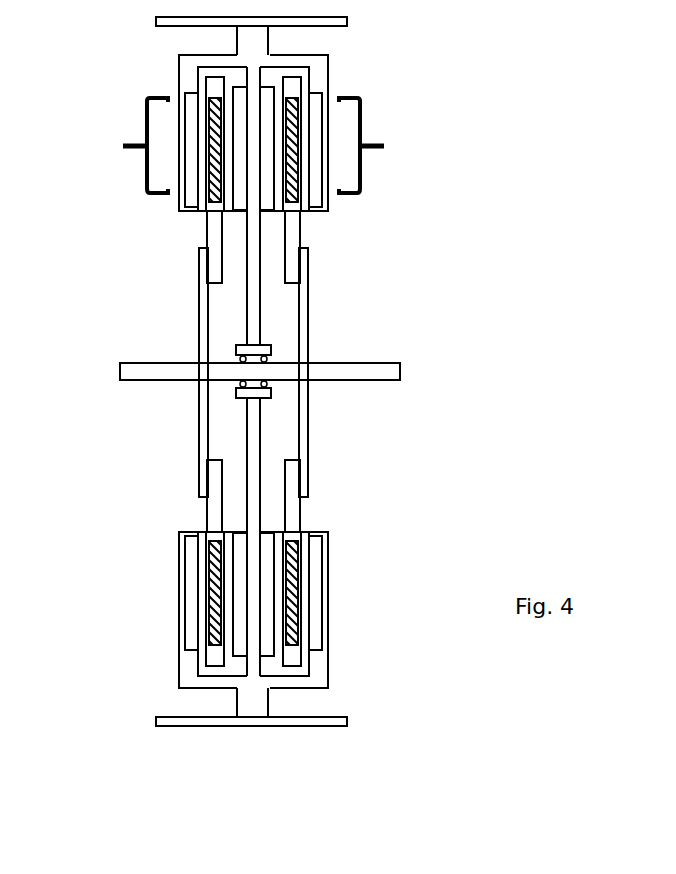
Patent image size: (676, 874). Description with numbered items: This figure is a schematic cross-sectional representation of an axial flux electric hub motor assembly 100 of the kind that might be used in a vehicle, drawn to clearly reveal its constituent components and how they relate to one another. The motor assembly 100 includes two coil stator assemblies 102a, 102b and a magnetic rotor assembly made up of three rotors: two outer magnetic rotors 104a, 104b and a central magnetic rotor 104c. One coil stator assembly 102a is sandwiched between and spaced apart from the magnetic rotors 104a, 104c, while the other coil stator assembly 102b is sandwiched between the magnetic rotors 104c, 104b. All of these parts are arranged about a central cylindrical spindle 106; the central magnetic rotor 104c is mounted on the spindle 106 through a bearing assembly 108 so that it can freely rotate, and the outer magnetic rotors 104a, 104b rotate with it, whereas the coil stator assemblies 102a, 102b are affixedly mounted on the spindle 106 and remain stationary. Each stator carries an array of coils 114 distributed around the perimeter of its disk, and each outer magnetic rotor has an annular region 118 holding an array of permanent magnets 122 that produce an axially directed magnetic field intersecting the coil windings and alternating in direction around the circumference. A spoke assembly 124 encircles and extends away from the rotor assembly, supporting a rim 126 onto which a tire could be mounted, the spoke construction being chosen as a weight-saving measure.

The motor assembly 100 is at (438, 95).
The rim 126 is at (347, 21).
The spoke assembly 124 is at (237, 38).
The outer magnetic rotor 104a is at (186, 77).
The outer magnetic rotor 104b is at (322, 80).
The central magnetic rotor 104c is at (250, 247).
The permanent magnets 122 is at (190, 174).
The coils 114 is at (213, 118).
The annular region 118 is at (253, 145).
The bearing assembly 108 is at (283, 346).
The spindle 106 is at (350, 370).
The coil stator assembly 102a is at (207, 512).
The coil stator assembly 102b is at (302, 513).